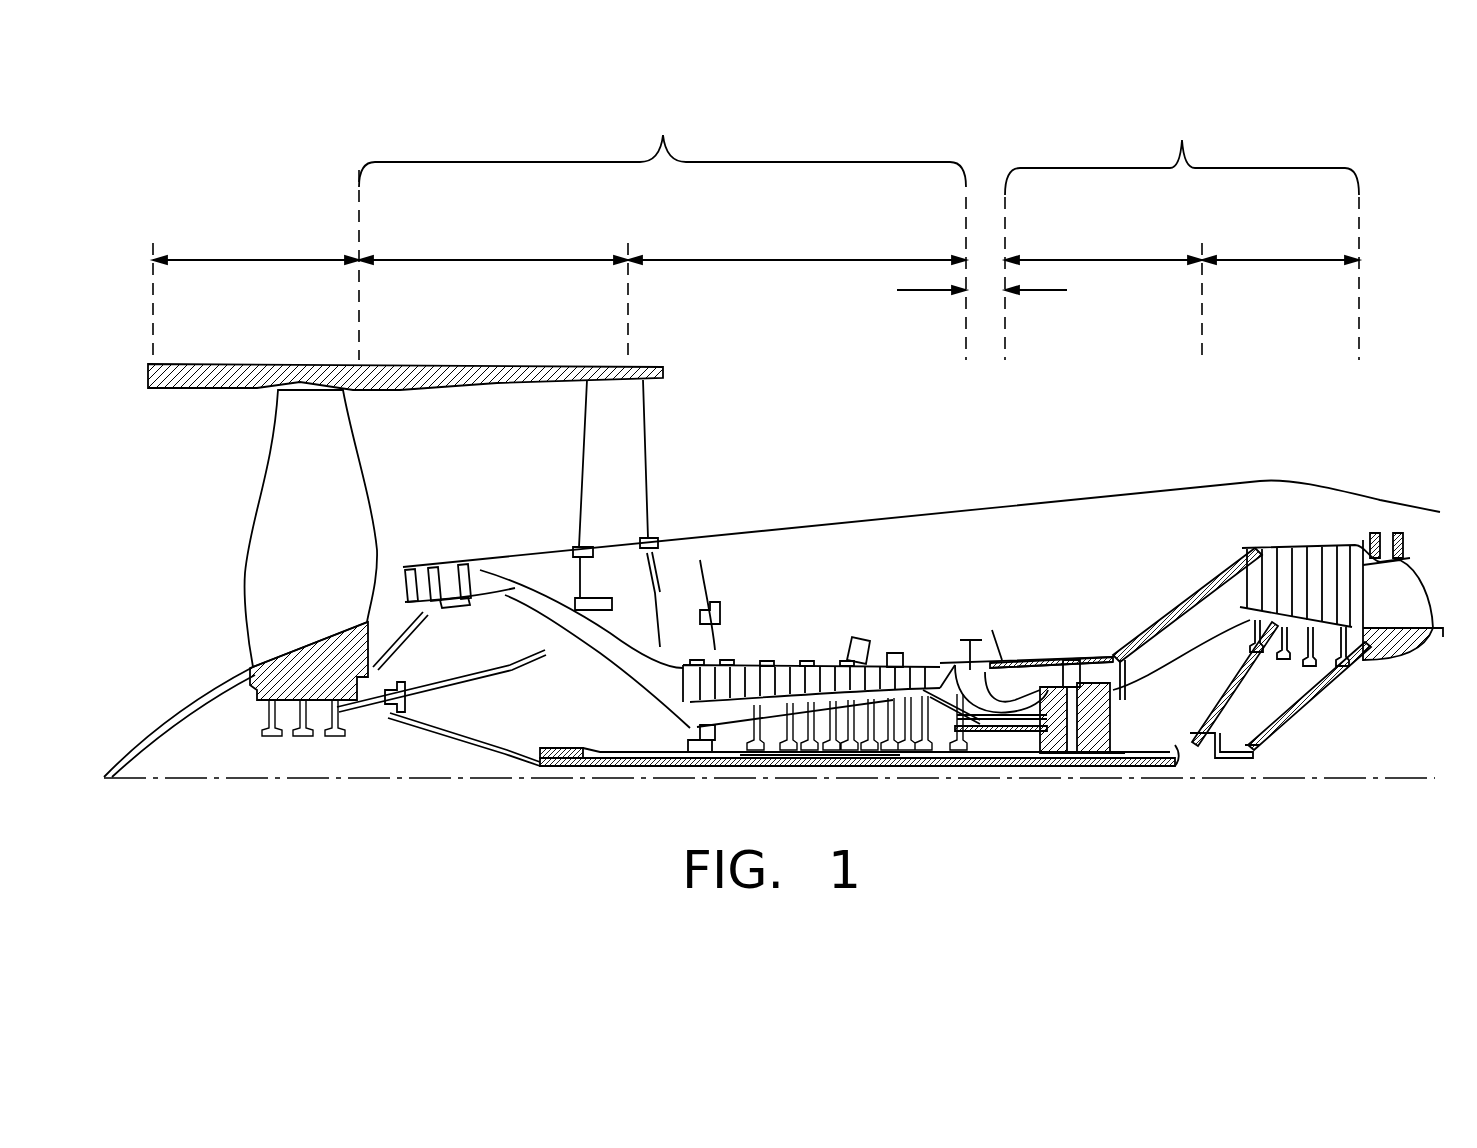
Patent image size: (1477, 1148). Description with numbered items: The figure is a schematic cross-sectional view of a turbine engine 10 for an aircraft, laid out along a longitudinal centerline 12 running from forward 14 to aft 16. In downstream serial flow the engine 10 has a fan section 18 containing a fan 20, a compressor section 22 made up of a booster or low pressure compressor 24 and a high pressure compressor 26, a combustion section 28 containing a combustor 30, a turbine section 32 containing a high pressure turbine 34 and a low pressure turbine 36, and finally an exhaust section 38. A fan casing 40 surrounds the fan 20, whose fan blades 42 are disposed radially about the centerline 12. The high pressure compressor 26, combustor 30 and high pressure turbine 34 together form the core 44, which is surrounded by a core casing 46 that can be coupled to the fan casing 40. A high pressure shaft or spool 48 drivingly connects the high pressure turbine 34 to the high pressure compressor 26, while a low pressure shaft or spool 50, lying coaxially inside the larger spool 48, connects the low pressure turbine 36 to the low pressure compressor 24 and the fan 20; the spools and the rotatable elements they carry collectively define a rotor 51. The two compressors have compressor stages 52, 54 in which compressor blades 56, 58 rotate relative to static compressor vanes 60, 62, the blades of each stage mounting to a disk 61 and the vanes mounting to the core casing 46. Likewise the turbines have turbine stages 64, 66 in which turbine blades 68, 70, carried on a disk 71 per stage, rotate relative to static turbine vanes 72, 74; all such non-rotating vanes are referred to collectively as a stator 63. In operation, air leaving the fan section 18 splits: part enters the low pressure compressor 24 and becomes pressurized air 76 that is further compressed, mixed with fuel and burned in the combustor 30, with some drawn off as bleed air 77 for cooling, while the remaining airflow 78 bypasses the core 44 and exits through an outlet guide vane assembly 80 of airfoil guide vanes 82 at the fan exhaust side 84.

The engine 10 is at (1376, 288).
The centerline 12 is at (233, 780).
The forward 14 is at (188, 505).
The aft 16 is at (1466, 598).
The fan section 18 is at (257, 260).
The fan 20 is at (220, 623).
The compressor section 22 is at (663, 135).
The low pressure compressor 24 is at (494, 260).
The high pressure compressor 26 is at (795, 260).
The combustion section 28 is at (912, 292).
The combustor 30 is at (1003, 655).
The turbine section 32 is at (1182, 140).
The high pressure turbine 34 is at (1102, 260).
The low pressure turbine 36 is at (1278, 260).
The exhaust section 38 is at (1452, 532).
The fan casing 40 is at (395, 365).
The fan blades 42 is at (327, 432).
The core 44 is at (928, 545).
The core casing 46 is at (1187, 587).
The HP shaft 48 is at (965, 733).
The LP shaft 50 is at (560, 762).
The rotor 51 is at (830, 785).
The compressor stages 52 is at (478, 510).
The compressor stages 54 is at (785, 662).
The compressor blades 56 is at (437, 572).
The compressor blades 58 is at (716, 668).
The static compressor vanes 60 is at (423, 572).
The disk 61 is at (452, 605).
The static compressor vanes 62 is at (696, 700).
The stator 63 is at (1260, 546).
The turbine stages 64 is at (1008, 607).
The turbine stages 66 is at (1283, 507).
The turbine blades 68 is at (1058, 670).
The turbine blades 70 is at (1345, 548).
The disk 71 is at (1073, 722).
The static turbine vanes 72 is at (1048, 660).
The static turbine vanes 74 is at (1325, 560).
The pressurized air 76 is at (630, 670).
The bleed air 77 is at (817, 657).
The airflow 78 is at (676, 440).
The outlet guide vane assembly 80 is at (668, 499).
The airfoil guide vanes 82 is at (590, 477).
The fan exhaust side 84 is at (668, 412).